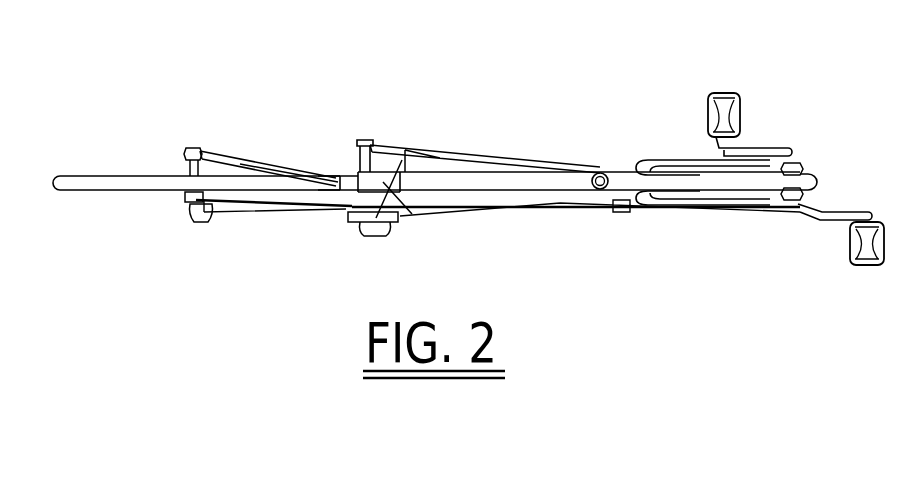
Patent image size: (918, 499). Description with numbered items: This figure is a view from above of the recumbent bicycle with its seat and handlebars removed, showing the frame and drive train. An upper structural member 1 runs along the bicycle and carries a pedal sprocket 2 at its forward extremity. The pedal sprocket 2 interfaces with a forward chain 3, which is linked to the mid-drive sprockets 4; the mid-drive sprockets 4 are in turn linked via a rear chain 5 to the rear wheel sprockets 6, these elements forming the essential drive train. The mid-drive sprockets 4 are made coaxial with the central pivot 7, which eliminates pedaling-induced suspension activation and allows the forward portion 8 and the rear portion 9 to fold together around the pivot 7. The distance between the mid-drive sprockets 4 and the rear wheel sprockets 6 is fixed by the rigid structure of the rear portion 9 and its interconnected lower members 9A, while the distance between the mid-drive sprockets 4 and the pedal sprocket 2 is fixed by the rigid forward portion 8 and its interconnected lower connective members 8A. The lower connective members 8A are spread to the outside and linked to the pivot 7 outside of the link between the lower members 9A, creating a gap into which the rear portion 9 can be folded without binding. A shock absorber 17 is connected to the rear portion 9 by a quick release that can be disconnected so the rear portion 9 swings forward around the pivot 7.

The upper structural member 1 is at (517, 183).
The pedal sprocket 2 is at (793, 213).
The forward chain 3 is at (672, 210).
The mid-drive sprockets 4 is at (356, 223).
The rear chain 5 is at (313, 203).
The rear wheel sprockets 6 is at (184, 205).
The pivot 7 is at (363, 139).
The forward portion 8 is at (835, 80).
The rear portion 9 is at (364, 80).
The lower connective members 8A is at (428, 150).
The lower members 9A is at (294, 162).
The shock absorber 17 is at (386, 186).